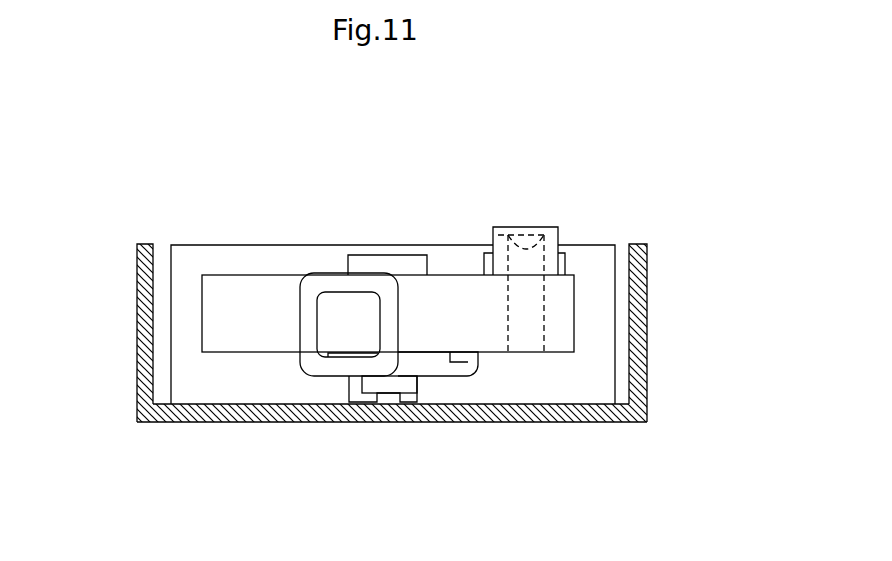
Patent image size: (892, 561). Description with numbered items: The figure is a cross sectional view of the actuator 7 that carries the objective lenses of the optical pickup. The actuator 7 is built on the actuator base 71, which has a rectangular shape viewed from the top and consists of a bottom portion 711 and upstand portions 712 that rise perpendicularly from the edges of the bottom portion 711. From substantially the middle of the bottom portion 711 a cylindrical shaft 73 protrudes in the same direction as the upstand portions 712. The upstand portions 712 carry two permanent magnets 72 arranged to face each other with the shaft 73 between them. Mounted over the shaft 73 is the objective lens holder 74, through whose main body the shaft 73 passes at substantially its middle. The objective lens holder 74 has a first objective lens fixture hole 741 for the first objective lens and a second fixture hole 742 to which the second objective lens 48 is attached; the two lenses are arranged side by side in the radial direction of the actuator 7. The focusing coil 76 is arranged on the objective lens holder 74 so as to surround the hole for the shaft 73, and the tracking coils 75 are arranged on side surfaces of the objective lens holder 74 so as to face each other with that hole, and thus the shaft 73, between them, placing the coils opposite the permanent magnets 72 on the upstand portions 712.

The actuator 7 is at (158, 165).
The actuator base 71 is at (137, 275).
The bottom portion 711 is at (192, 410).
The upstand portions 712 is at (647, 293).
The permanent magnets 72 is at (372, 260).
The shaft 73 is at (388, 395).
The objective lens holder 74 is at (253, 333).
The first objective lens fixture hole 741 is at (566, 265).
The second fixture hole 742 is at (557, 243).
The tracking coils 75 is at (318, 285).
The focusing coil 76 is at (430, 363).
The second objective lens 48 is at (523, 228).